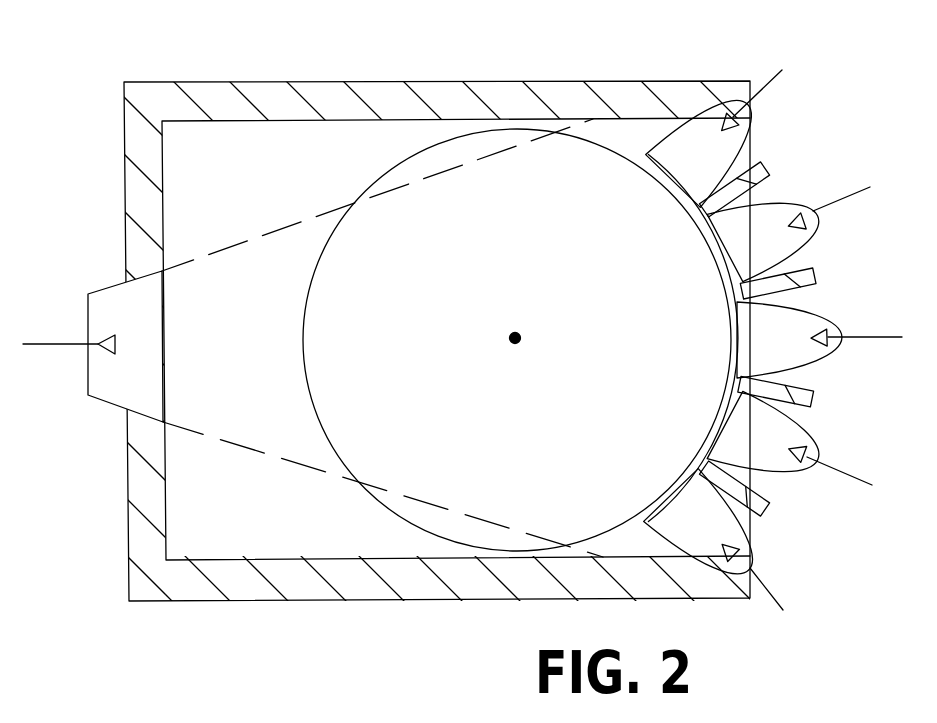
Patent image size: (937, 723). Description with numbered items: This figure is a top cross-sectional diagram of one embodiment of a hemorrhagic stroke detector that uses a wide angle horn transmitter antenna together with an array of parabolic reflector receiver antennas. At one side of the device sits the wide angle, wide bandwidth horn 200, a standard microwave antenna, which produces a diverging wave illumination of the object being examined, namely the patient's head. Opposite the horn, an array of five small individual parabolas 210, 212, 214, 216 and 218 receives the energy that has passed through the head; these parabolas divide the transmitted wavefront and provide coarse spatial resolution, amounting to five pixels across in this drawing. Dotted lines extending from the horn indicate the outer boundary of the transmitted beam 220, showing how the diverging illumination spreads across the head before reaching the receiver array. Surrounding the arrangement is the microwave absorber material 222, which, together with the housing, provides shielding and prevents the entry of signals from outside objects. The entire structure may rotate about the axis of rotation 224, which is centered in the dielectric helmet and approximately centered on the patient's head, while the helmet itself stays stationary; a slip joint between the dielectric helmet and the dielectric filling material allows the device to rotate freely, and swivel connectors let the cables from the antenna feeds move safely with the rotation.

The wide angle, wide bandwidth horn 200 is at (110, 403).
The parabola 210 is at (755, 118).
The parabola 212 is at (800, 197).
The parabola 214 is at (830, 317).
The parabola 216 is at (818, 443).
The parabola 218 is at (753, 553).
The transmitted beam 220 is at (245, 240).
The microwave absorber material 222 is at (602, 82).
The axis of rotation 224 is at (521, 334).